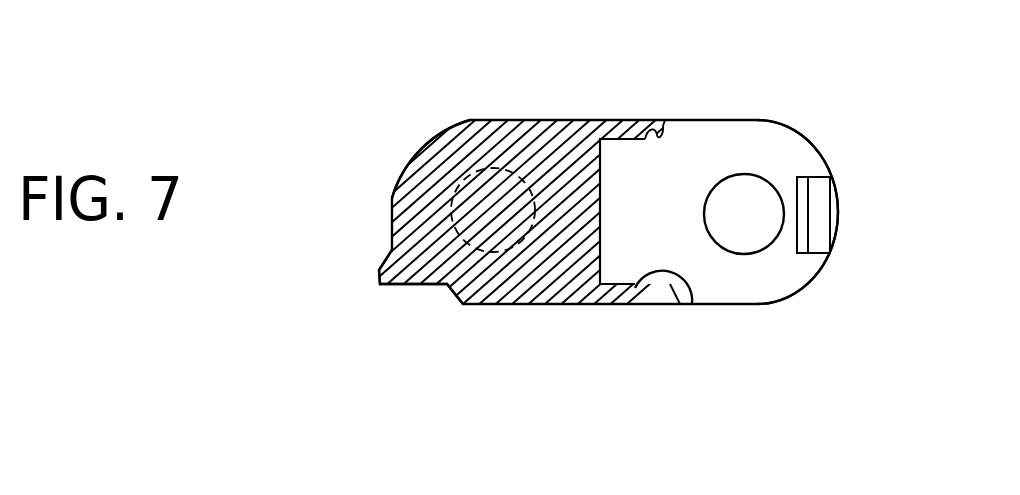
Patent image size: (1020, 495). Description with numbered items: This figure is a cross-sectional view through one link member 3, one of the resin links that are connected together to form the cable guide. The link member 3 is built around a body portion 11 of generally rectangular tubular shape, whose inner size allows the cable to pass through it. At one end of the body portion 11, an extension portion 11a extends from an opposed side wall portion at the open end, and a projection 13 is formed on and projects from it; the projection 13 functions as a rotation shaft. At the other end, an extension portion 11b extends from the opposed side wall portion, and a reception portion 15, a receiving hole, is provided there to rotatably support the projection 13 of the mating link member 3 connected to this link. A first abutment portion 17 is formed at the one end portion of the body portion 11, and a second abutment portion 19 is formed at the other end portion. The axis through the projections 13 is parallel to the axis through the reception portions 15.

The link member 3 is at (296, 151).
The body portion 11 is at (577, 119).
The extension portion 11a is at (443, 128).
The extension portion 11b is at (763, 121).
The projection 13 is at (455, 226).
The reception portion 15 is at (765, 246).
The first abutment portion 17 is at (413, 286).
The second abutment portion 19 is at (692, 305).